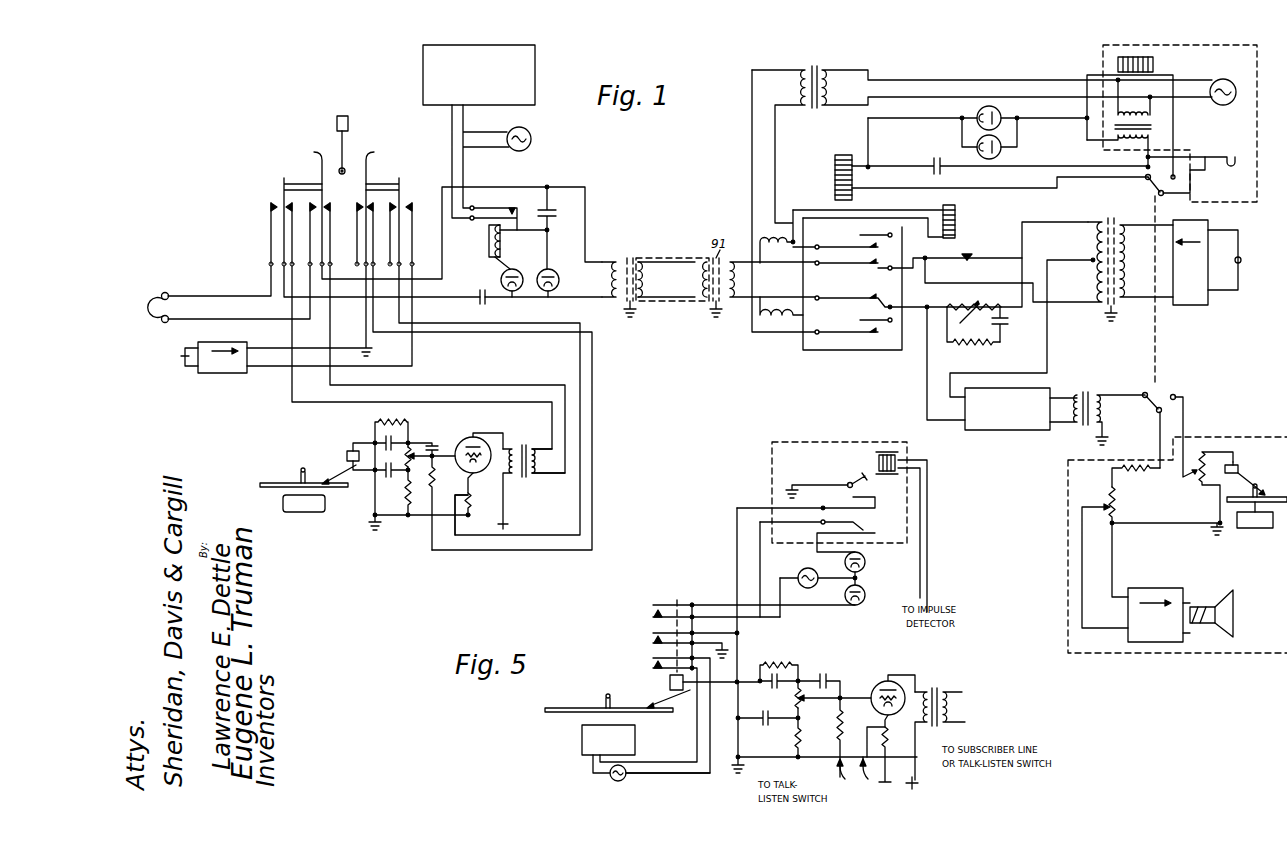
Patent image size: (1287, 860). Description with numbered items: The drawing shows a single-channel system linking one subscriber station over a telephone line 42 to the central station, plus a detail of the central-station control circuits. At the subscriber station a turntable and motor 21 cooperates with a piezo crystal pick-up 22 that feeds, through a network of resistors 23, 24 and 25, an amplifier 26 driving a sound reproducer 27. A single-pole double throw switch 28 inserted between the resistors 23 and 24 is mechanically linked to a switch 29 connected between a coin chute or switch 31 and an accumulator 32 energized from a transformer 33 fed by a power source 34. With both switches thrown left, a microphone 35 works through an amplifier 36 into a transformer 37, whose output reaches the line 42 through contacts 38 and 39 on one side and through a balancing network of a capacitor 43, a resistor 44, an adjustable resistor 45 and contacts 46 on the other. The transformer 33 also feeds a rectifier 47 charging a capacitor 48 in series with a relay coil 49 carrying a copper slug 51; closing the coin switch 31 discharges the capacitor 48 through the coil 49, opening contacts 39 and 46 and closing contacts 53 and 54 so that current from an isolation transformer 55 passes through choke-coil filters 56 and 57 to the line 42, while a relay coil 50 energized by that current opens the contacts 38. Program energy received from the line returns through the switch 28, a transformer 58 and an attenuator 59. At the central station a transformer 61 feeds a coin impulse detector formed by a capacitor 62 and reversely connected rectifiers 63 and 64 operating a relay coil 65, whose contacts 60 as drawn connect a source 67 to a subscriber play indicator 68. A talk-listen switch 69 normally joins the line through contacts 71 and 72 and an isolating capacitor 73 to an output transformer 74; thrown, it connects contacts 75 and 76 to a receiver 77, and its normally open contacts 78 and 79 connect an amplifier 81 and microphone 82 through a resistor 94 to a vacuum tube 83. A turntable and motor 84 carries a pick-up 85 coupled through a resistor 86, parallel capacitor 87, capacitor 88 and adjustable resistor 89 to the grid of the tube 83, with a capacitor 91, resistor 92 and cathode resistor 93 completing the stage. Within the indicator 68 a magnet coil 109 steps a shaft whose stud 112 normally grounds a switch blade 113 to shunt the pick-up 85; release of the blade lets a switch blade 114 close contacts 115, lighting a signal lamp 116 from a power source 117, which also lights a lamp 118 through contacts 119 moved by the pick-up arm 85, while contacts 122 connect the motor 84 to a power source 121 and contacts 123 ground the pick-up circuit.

In FIG. 1, the turntable and motor 21 is at (1250, 529).
In FIG. 1, the phonograph pick-up 22 is at (1240, 465).
In FIG. 1, the resistor 23 is at (1198, 487).
In FIG. 1, the resistor 24 is at (1124, 476).
In FIG. 1, the resistor 25 is at (1122, 508).
In FIG. 1, the amplifier 26 is at (1145, 588).
In FIG. 1, the sound reproducer 27 is at (1220, 600).
In FIG. 1, the single-pole double throw switch 28 is at (1160, 393).
In FIG. 1, the switch 29 is at (1144, 188).
In FIG. 1, the coin chute or switch 31 is at (1240, 160).
In FIG. 1, the accumulator 32 is at (1155, 66).
In FIG. 1, the transformer 33 is at (1152, 131).
In FIG. 1, the source of power 34 is at (1226, 105).
In FIG. 1, the microphone 35 is at (1242, 263).
In FIG. 1, the amplifier 36 is at (1196, 305).
In FIG. 1, the transformer 37 is at (1123, 308).
In FIG. 1, the switch contacts 38 is at (970, 260).
In FIG. 1, the switch contacts 39 is at (865, 266).
In FIG. 1, the telephone line 42 is at (675, 258).
In FIG. 1, the capacitor 43 is at (1009, 322).
In FIG. 1, the resistor 44 is at (977, 347).
In FIG. 1, the adjustable resistor 45 is at (958, 302).
In FIG. 1, the pair of contacts 46 is at (886, 305).
In FIG. 1, the rectifier 47 is at (1003, 122).
In FIG. 1, the capacitor 48 is at (932, 161).
In FIG. 1, the relay coil 49 is at (835, 176).
In FIG. 1, the relay coil 50 is at (950, 205).
In FIG. 1, the copper slug 51 is at (835, 197).
In FIG. 1, the contacts 53 is at (880, 247).
In FIG. 1, the contacts 54 is at (885, 332).
In FIG. 1, the transformer 55 is at (812, 66).
In FIG. 1, the alternating current filter means 56 is at (775, 250).
In FIG. 1, the alternating current filter means 57 is at (781, 310).
In FIG. 1, the transformer 58 is at (1085, 392).
In FIG. 1, the attenuator 59 is at (995, 430).
In FIG. 1, the relay contacts 60 is at (510, 208).
In FIG. 1, the transformer 61 is at (628, 258).
In FIG. 1, the capacitor 62 is at (560, 212).
In FIG. 1, the rectifier 63 is at (553, 293).
In FIG. 1, the rectifier 64 is at (516, 292).
In FIG. 1, the relay coil 65 is at (489, 240).
In FIG. 1, the source of energy 67 is at (527, 147).
In FIG. 1, the subscriber play indicator 68 is at (541, 66).
In FIG. 5, the subscriber play indicator 68 is at (820, 492).
In FIG. 1, the talk-listen switch 69 is at (337, 122).
In FIG. 1, the contact 71 is at (330, 207).
In FIG. 1, the contact 72 is at (290, 200).
In FIG. 1, the isolating and current limiting capacitor 73 is at (478, 296).
In FIG. 1, the output transformer 74 is at (522, 445).
In FIG. 5, the output transformer 74 is at (933, 686).
In FIG. 1, the switch contact 75 is at (312, 212).
In FIG. 1, the switch contact 76 is at (268, 213).
In FIG. 1, the headset or telephone receiver 77 is at (170, 295).
In FIG. 1, the switch contact 78 is at (410, 203).
In FIG. 1, the switch contact 79 is at (375, 200).
In FIG. 1, the amplifier 81 is at (237, 374).
In FIG. 1, the microphone 82 is at (185, 357).
In FIG. 1, the vacuum tube 83 is at (466, 441).
In FIG. 5, the vacuum tube 83 is at (879, 684).
In FIG. 1, the phonograph turntable and motor 84 is at (287, 507).
In FIG. 5, the phonograph turntable and motor 84 is at (582, 740).
In FIG. 1, the phonograph pick-up 85 is at (347, 455).
In FIG. 5, the phonograph pick-up 85 is at (670, 680).
In FIG. 1, the resistor 86 is at (393, 419).
In FIG. 5, the resistor 86 is at (779, 657).
In FIG. 1, the capacitor 87 is at (384, 448).
In FIG. 5, the capacitor 87 is at (770, 686).
In FIG. 1, the capacitor 88 is at (432, 443).
In FIG. 5, the capacitor 88 is at (823, 674).
In FIG. 1, the adjustable resistor 89 is at (411, 461).
In FIG. 5, the adjustable resistor 89 is at (804, 703).
In FIG. 1, the capacitor 91 is at (390, 479).
In FIG. 5, the capacitor 91 is at (765, 726).
In FIG. 1, the resistor 92 is at (410, 516).
In FIG. 5, the resistor 92 is at (803, 739).
In FIG. 1, the resistor 93 is at (470, 512).
In FIG. 5, the resistor 93 is at (888, 744).
In FIG. 1, the resistor 94 is at (436, 470).
In FIG. 5, the resistor 94 is at (849, 714).
In FIG. 5, the magnet coil 109 is at (887, 475).
In FIG. 5, the stud 112 is at (862, 477).
In FIG. 5, the switch blade 113 is at (876, 508).
In FIG. 5, the switch blade 114 is at (876, 534).
In FIG. 5, the contacts 115 is at (865, 525).
In FIG. 5, the signal lamp 116 is at (866, 562).
In FIG. 5, the source of power 117 is at (801, 574).
In FIG. 5, the signal lamp 118 is at (866, 596).
In FIG. 5, the contacts 119 is at (649, 612).
In FIG. 5, the source of power 121 is at (612, 779).
In FIG. 5, the contacts 122 is at (649, 664).
In FIG. 5, the contacts 123 is at (649, 640).